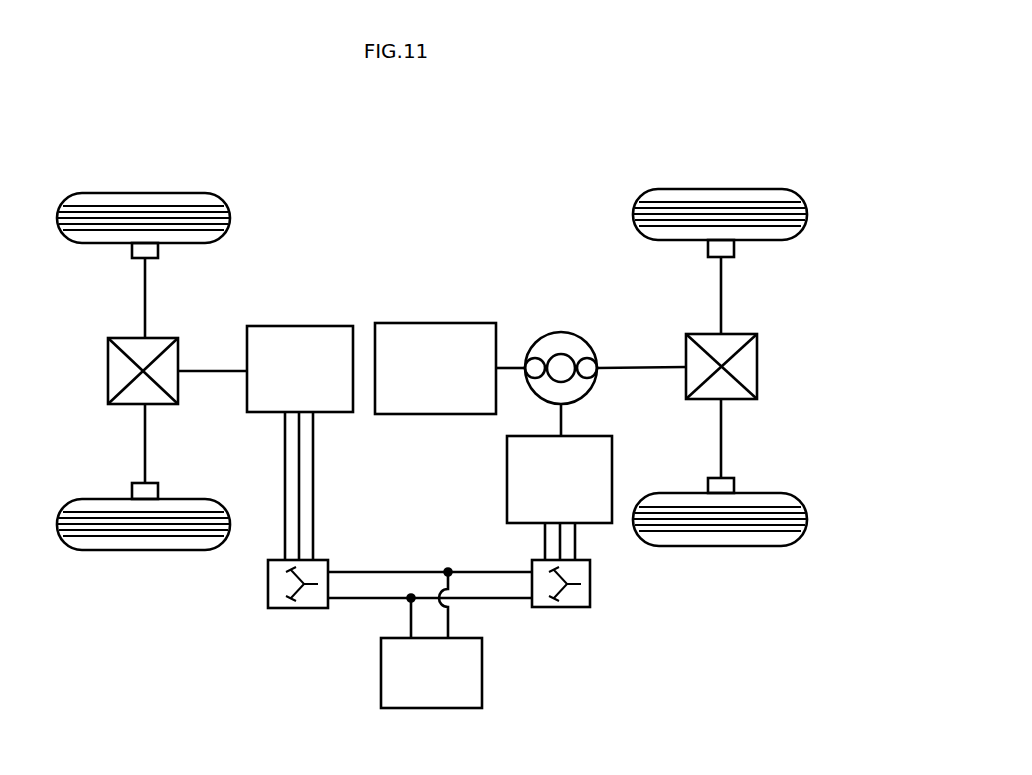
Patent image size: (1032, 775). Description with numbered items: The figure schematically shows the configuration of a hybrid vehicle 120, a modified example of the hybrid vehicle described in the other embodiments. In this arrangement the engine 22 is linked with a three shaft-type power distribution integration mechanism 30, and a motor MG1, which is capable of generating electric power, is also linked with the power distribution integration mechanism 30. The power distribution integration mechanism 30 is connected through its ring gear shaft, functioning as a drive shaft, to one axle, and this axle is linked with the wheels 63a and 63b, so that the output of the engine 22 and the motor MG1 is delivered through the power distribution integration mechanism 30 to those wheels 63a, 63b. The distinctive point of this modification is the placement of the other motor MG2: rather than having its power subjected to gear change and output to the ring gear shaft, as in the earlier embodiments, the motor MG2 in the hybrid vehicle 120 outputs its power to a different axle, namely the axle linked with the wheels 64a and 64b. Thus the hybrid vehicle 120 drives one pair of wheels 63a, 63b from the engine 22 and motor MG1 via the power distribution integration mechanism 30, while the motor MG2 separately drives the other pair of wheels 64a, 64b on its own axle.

The hybrid vehicle 120 is at (456, 216).
The wheel 64a is at (145, 193).
The wheel 64b is at (145, 550).
The wheel 63a is at (721, 189).
The wheel 63b is at (721, 546).
The motor MG2 is at (300, 326).
The engine 22 is at (437, 323).
The power distribution integration mechanism 30 is at (561, 332).
The motor MG1 is at (507, 478).